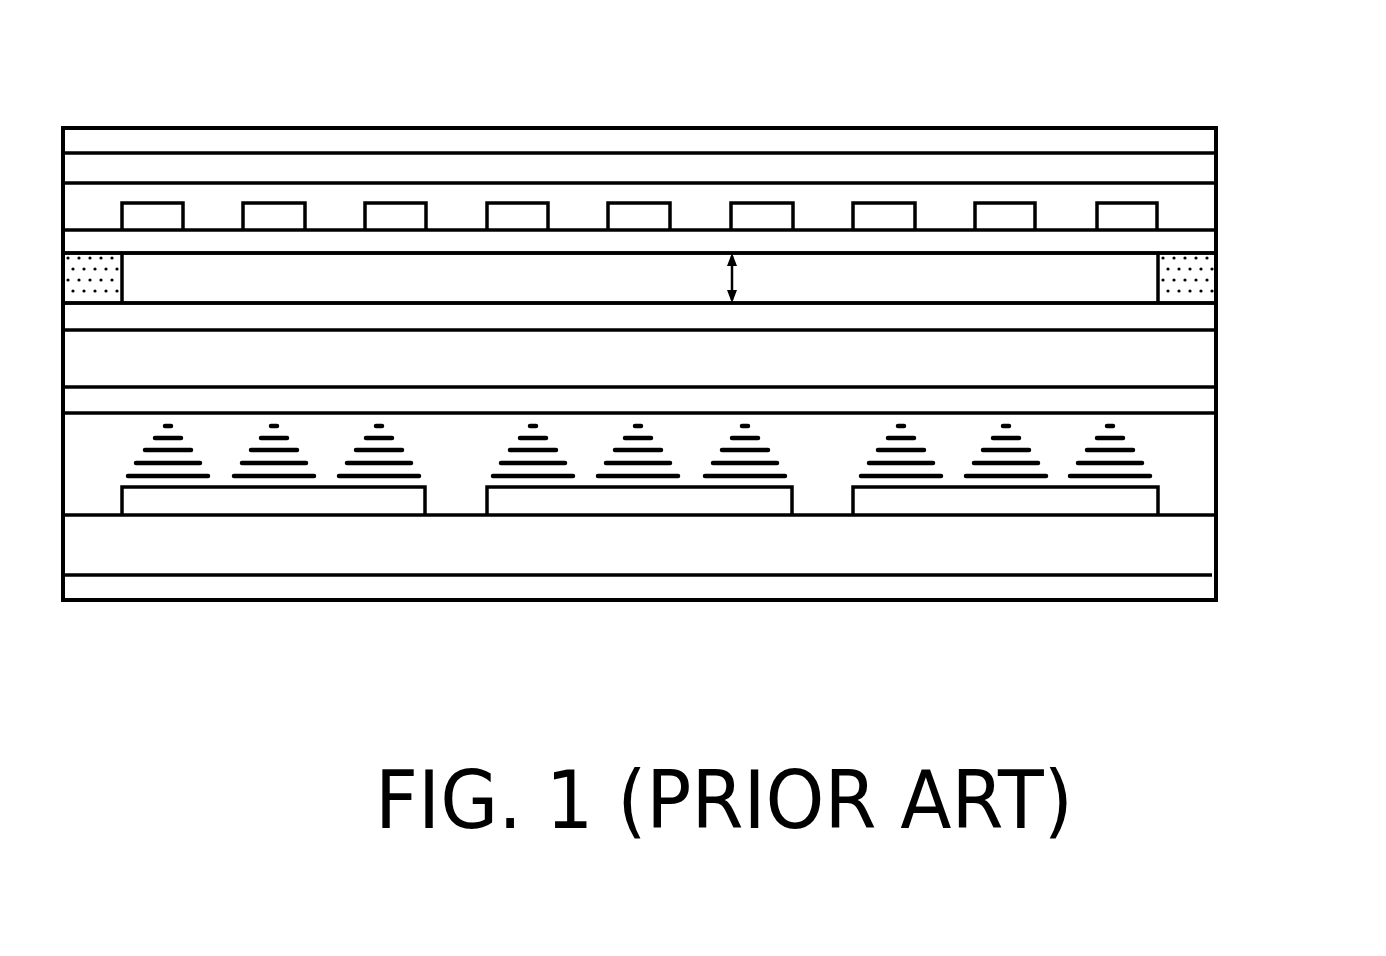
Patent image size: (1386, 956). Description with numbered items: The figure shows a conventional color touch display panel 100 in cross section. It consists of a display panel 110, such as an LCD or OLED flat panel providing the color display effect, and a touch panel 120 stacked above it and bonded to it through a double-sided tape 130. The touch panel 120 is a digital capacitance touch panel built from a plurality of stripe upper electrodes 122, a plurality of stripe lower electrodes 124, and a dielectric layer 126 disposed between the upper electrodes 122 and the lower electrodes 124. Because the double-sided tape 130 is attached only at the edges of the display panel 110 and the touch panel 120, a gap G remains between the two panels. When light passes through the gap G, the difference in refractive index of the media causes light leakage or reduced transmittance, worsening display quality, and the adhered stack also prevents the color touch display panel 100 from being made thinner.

The color touch display panel 100 is at (1217, 668).
The display panel 110 is at (1216, 475).
The touch panel 120 is at (1216, 208).
The stripe upper electrodes 122 is at (1113, 175).
The stripe lower electrodes 124 is at (1007, 215).
The dielectric layer 126 is at (937, 215).
The double-sided tape 130 is at (1200, 283).
The gap G is at (732, 280).